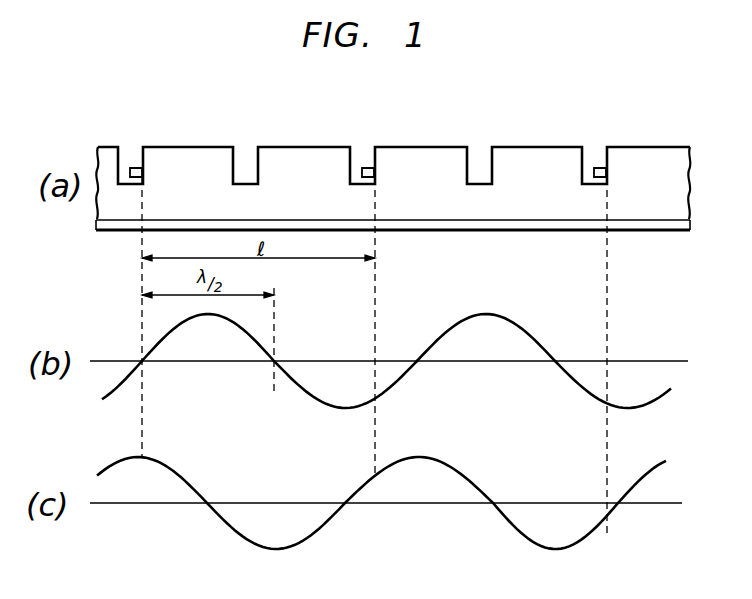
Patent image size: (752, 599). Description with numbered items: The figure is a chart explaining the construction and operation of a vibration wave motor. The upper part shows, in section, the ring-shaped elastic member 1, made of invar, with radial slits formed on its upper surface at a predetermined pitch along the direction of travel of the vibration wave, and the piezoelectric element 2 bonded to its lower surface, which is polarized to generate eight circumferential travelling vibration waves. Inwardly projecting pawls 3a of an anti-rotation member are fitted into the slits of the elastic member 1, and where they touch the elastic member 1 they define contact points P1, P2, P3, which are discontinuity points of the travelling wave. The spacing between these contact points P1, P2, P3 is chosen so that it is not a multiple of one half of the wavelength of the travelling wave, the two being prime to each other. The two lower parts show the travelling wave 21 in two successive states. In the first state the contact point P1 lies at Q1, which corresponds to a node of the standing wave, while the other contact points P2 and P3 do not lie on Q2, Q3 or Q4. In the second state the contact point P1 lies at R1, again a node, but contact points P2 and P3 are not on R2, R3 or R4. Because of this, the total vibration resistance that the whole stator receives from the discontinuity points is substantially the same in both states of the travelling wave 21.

The elastic member 1 is at (668, 160).
The piezoelectric element 2 is at (673, 232).
The pawls 3a is at (135, 167).
The contact point P1 is at (143, 173).
The contact point P2 is at (375, 175).
The contact point P3 is at (607, 176).
The travelling wave 21 is at (106, 395).
The node of standing wave Q1 is at (143, 363).
The node of standing wave Q2 is at (273, 363).
The node of standing wave Q3 is at (418, 363).
The node of standing wave Q4 is at (554, 363).
The node of standing wave R1 is at (142, 457).
The node of standing wave R2 is at (275, 550).
The node of standing wave R3 is at (418, 457).
The node of standing wave R4 is at (555, 550).